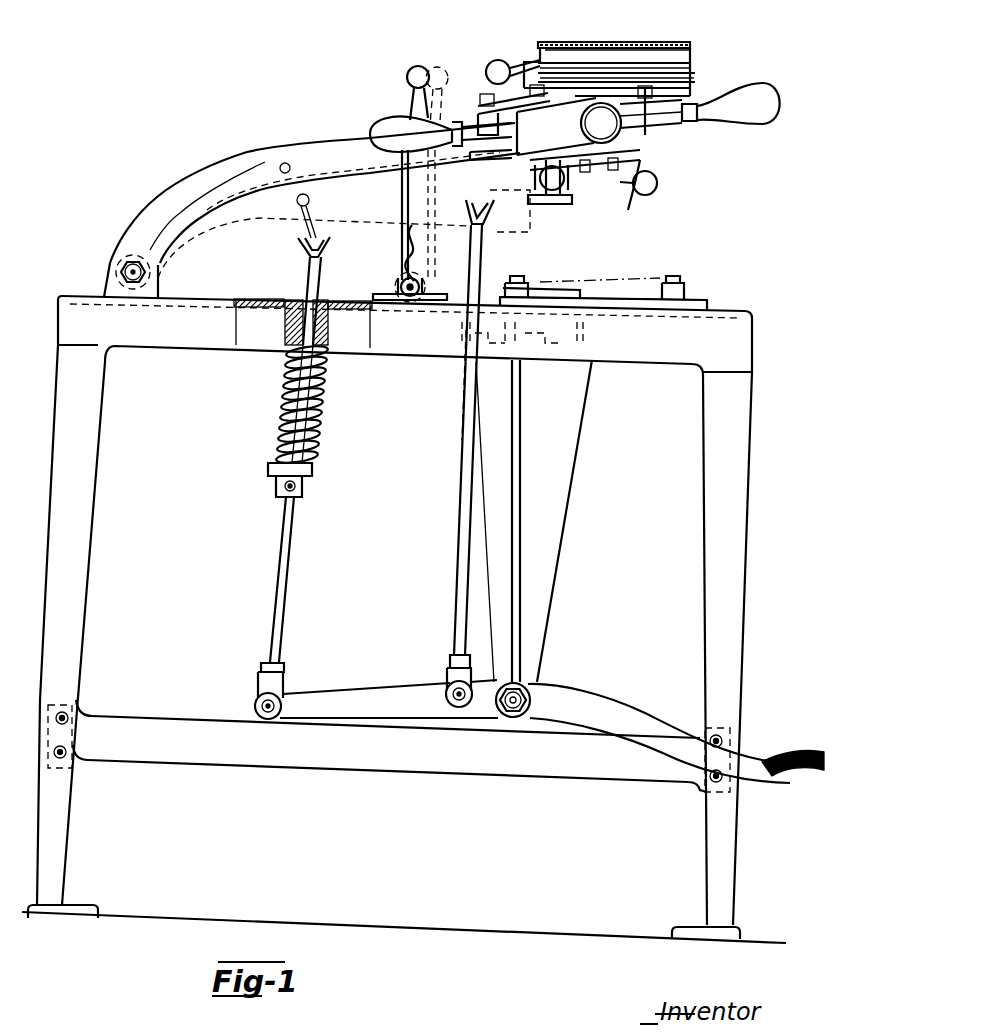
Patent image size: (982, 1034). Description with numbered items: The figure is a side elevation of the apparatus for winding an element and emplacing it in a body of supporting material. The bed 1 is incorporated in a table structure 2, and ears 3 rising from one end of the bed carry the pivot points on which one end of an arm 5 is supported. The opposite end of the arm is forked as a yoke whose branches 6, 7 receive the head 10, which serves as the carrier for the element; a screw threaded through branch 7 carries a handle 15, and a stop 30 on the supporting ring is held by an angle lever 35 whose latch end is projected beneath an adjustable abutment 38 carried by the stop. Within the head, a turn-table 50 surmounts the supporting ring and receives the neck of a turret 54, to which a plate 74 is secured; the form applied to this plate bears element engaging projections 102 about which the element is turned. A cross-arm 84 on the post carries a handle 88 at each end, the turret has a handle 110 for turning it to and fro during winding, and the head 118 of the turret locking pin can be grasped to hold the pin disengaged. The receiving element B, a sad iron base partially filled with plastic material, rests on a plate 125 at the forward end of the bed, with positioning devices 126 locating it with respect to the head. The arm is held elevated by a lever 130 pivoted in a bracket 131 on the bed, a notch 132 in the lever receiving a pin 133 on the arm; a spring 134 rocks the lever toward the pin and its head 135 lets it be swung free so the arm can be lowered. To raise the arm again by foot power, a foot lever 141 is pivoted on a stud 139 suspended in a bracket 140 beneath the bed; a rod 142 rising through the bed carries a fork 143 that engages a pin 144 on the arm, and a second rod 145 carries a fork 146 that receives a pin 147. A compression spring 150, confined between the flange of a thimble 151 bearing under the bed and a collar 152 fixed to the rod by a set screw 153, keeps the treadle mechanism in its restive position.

The bed 1 is at (203, 309).
The table structure 2 is at (80, 548).
The ears 3 is at (152, 271).
The arm 5 is at (347, 142).
The branch 6 is at (672, 125).
The branch 7 is at (559, 128).
The head 10 is at (609, 55).
The handle 15 is at (632, 143).
The stop 30 is at (668, 136).
The angle lever 35 is at (573, 187).
The adjustable abutment 38 is at (672, 97).
The turn-table 50 is at (605, 116).
The turret 54 is at (690, 78).
The plate 74 is at (688, 63).
The cross-arm 84 is at (636, 188).
The handle 88 is at (657, 185).
The element engaging projections 102 is at (680, 43).
The handle 110 is at (502, 60).
The head 118 is at (558, 193).
The plate 125 is at (697, 307).
The positioning devices 126 is at (553, 281).
The receiving element B is at (627, 278).
The lever 130 is at (412, 102).
The bracket 131 is at (421, 287).
The notch 132 is at (430, 150).
The pin 133 is at (413, 153).
The spring 134 is at (406, 250).
The head 135 is at (413, 70).
The stud 139 is at (531, 700).
The bracket 140 is at (535, 628).
The foot lever 141 is at (665, 725).
The rod 142 is at (462, 568).
The fork 143 is at (486, 226).
The pin 144 is at (463, 139).
The second rod 145 is at (283, 585).
The fork 146 is at (322, 255).
The pin 147 is at (310, 202).
The compression spring 150 is at (318, 385).
The thimble 151 is at (285, 325).
The collar 152 is at (313, 472).
The set screw 153 is at (302, 488).